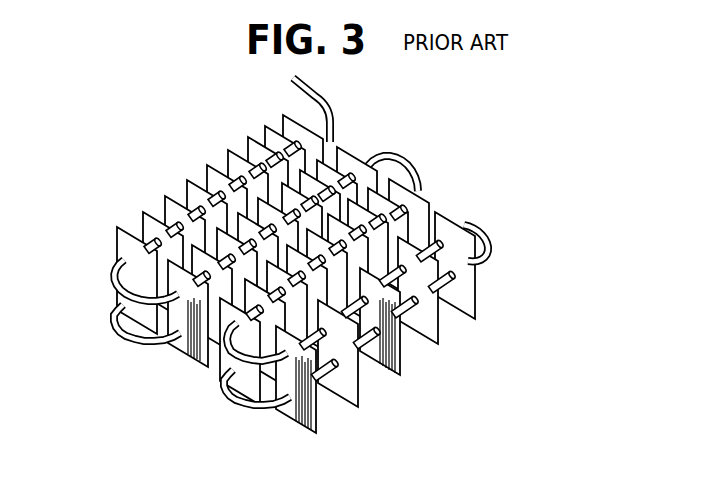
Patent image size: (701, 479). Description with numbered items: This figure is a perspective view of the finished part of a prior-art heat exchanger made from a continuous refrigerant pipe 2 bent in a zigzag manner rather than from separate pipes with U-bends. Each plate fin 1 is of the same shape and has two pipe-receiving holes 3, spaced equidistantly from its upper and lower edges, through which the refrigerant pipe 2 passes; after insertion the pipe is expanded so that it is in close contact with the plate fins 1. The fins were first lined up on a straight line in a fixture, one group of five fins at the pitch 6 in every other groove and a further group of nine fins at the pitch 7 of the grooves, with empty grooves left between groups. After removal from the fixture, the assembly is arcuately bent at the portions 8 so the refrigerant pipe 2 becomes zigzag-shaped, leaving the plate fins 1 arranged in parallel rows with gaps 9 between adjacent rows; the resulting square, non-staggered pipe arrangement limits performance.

The plate fin 1 is at (307, 271).
The refrigerant pipe 2 is at (481, 256).
The pipe-receiving hole 3 is at (474, 292).
The pitch 6 is at (320, 447).
The pitch of the grooves 7 is at (140, 206).
The arcuately bent portion 8 is at (238, 405).
The gap 9 is at (430, 219).